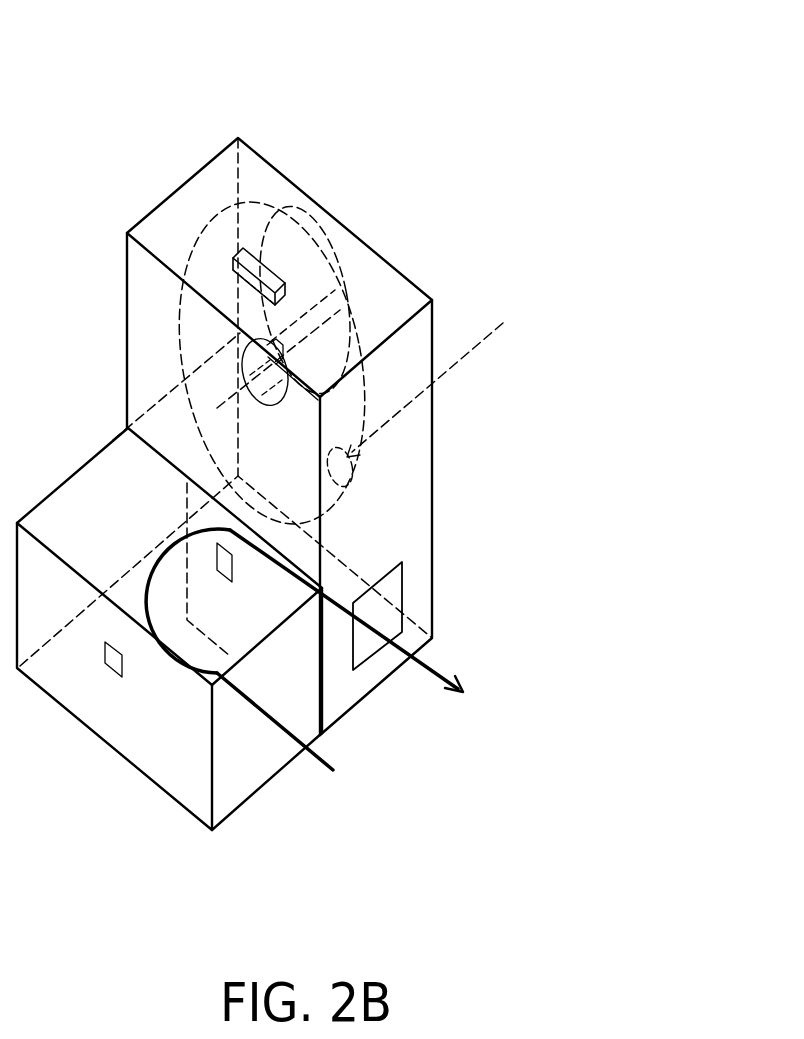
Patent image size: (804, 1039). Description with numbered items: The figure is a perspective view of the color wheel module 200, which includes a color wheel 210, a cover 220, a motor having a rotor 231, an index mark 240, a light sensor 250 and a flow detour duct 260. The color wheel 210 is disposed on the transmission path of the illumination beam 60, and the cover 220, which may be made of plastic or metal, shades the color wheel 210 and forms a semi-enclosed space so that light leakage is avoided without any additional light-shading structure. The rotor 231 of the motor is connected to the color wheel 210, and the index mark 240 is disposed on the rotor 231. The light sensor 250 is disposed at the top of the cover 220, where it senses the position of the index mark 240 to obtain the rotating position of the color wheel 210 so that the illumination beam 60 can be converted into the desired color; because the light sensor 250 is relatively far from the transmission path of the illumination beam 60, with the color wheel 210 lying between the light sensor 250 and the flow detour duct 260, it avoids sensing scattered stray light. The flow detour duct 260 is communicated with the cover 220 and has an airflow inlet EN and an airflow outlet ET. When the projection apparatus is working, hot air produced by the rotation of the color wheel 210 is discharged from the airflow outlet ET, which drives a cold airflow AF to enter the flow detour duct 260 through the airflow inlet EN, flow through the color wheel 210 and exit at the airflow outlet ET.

The color wheel module 200 is at (442, 100).
The color wheel 210 is at (203, 218).
The cover 220 is at (422, 437).
The rotor 231 is at (356, 295).
The index mark 240 is at (298, 330).
The light sensor 250 is at (258, 258).
The flow detour duct 260 is at (160, 770).
The illumination beam 60 is at (465, 357).
The airflow inlet EN is at (228, 735).
The airflow outlet ET is at (363, 630).
The cold airflow AF is at (440, 667).